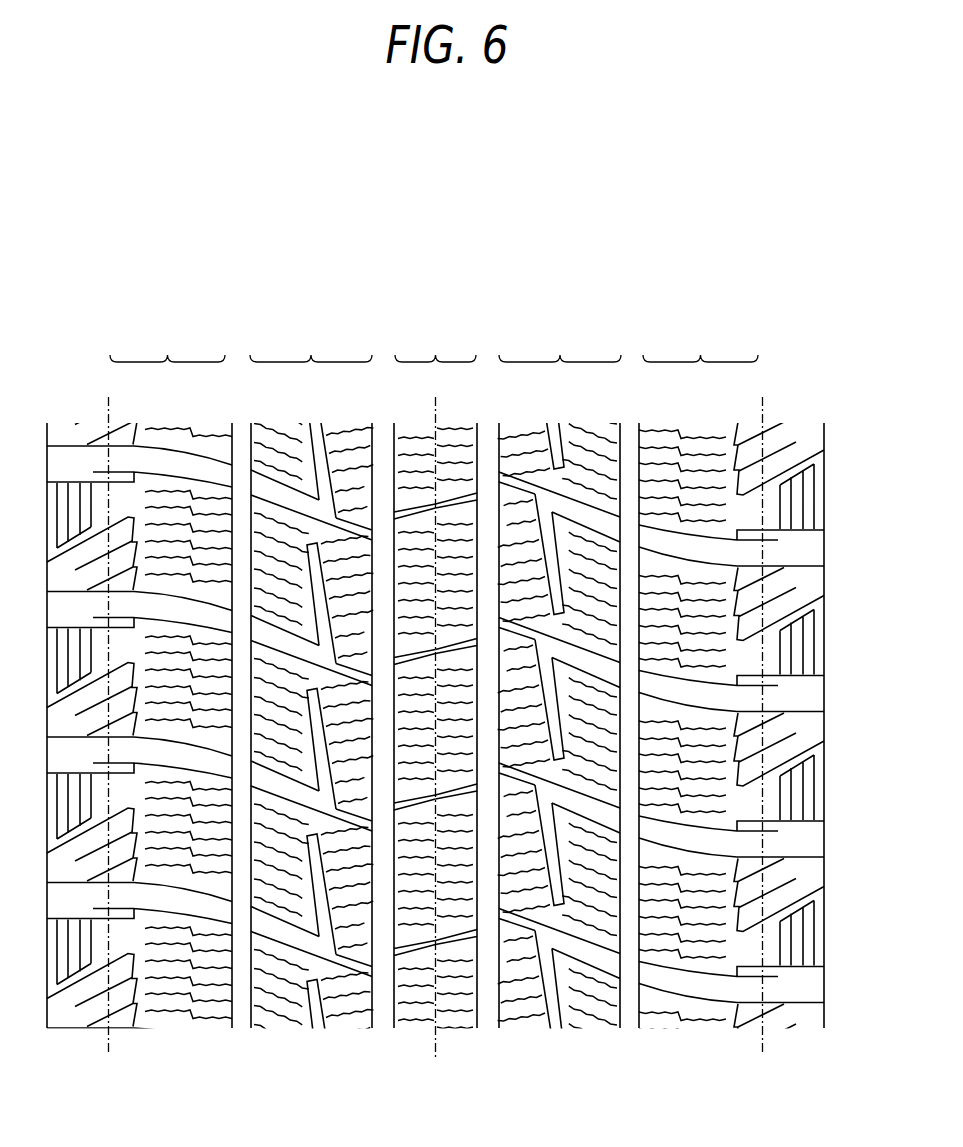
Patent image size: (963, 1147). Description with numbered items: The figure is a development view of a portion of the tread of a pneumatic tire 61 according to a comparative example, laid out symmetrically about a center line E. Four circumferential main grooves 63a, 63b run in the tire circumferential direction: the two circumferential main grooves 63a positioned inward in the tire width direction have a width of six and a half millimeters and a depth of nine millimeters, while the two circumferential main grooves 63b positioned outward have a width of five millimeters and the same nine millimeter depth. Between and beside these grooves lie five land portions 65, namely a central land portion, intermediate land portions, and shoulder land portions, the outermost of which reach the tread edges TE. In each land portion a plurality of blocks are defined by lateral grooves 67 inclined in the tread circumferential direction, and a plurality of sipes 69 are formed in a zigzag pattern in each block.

The pneumatic tire tread 61 is at (817, 392).
The circumferential main grooves 63a is at (382, 437).
The circumferential main grooves 63b is at (242, 440).
The land portions 65 is at (434, 345).
The lateral grooves 67 is at (155, 467).
The sipes 69 is at (182, 432).
The tread edge TE is at (436, 710).
The tire equator E is at (436, 713).